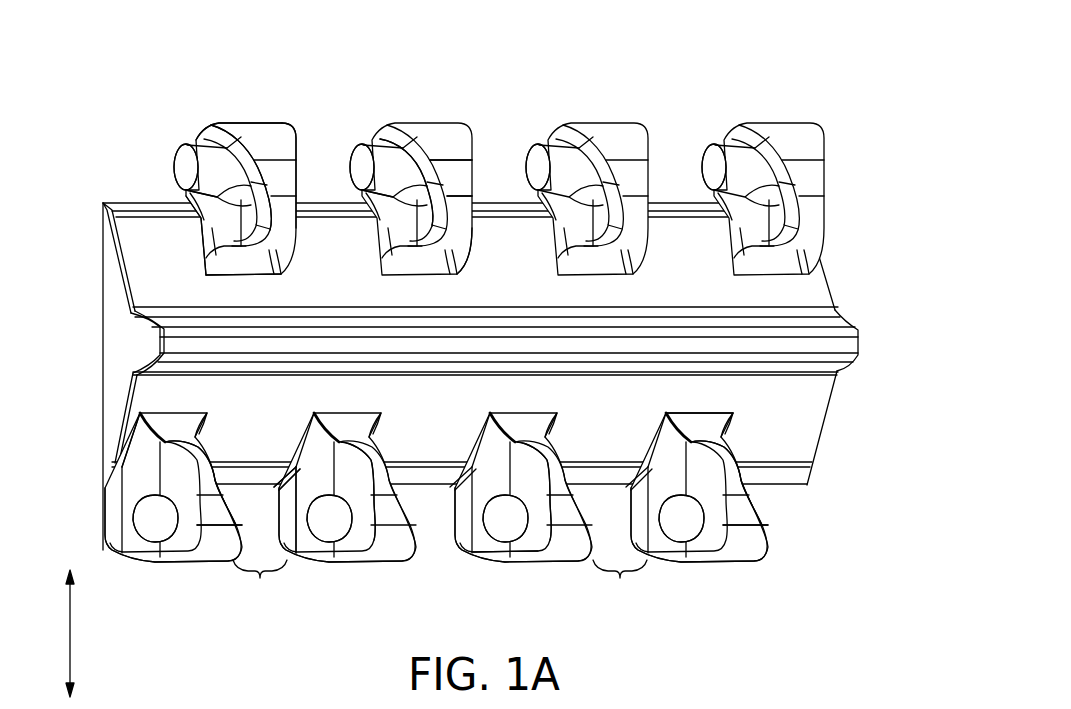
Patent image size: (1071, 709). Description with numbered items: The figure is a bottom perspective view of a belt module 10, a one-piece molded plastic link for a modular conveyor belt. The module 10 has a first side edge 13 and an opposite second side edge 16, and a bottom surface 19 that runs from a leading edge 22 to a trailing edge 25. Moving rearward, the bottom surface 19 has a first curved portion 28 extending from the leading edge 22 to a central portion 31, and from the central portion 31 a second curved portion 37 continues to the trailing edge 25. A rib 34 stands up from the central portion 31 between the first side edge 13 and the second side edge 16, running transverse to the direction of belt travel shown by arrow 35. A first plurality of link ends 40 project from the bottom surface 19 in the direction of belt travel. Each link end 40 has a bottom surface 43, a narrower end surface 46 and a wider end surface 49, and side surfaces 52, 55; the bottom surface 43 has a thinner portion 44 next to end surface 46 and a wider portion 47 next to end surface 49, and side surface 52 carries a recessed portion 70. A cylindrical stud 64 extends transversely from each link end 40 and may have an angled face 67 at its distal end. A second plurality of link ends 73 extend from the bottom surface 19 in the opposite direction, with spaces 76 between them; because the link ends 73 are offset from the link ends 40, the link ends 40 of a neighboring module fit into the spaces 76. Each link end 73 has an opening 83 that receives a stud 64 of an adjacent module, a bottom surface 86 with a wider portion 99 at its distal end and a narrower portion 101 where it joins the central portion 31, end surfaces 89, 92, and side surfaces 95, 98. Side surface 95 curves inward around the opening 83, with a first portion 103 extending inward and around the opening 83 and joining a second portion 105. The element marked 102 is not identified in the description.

The belt module 10 is at (785, 70).
The first side edge 13 is at (112, 308).
The second side edge 16 is at (825, 283).
The bottom surface 19 is at (325, 230).
The leading edge 22 is at (497, 203).
The trailing edge 25 is at (425, 487).
The first curved portion 28 is at (125, 210).
The central portion 31 is at (677, 240).
The rib 34 is at (843, 320).
The arrow 35 is at (70, 627).
The second curved portion 37 is at (793, 477).
The first plurality of link ends 40 is at (240, 110).
The bottom surface 43 is at (270, 130).
The thinner portion 44 is at (455, 222).
The end surface 46 is at (250, 262).
The wider portion 47 is at (455, 142).
The end surface 49 is at (200, 98).
The side surface 52 is at (223, 225).
The side surface 55 is at (313, 125).
The stud 64 is at (208, 140).
The angled face 67 is at (183, 177).
The recessed portion 70 is at (418, 224).
The second plurality of link ends 73 is at (183, 575).
The spaces 76 is at (440, 582).
The openings 83 is at (150, 517).
The bottom surface 86 is at (393, 513).
The end surface 89 is at (703, 422).
The end surface 92 is at (527, 553).
The side surface 95 is at (145, 473).
The side surface 98 is at (230, 495).
The wider portion 99 is at (210, 545).
The narrower portion 101 is at (375, 452).
The outer band of end clip 102 is at (763, 502).
The first portion 103 is at (293, 540).
The second portion 105 is at (355, 480).